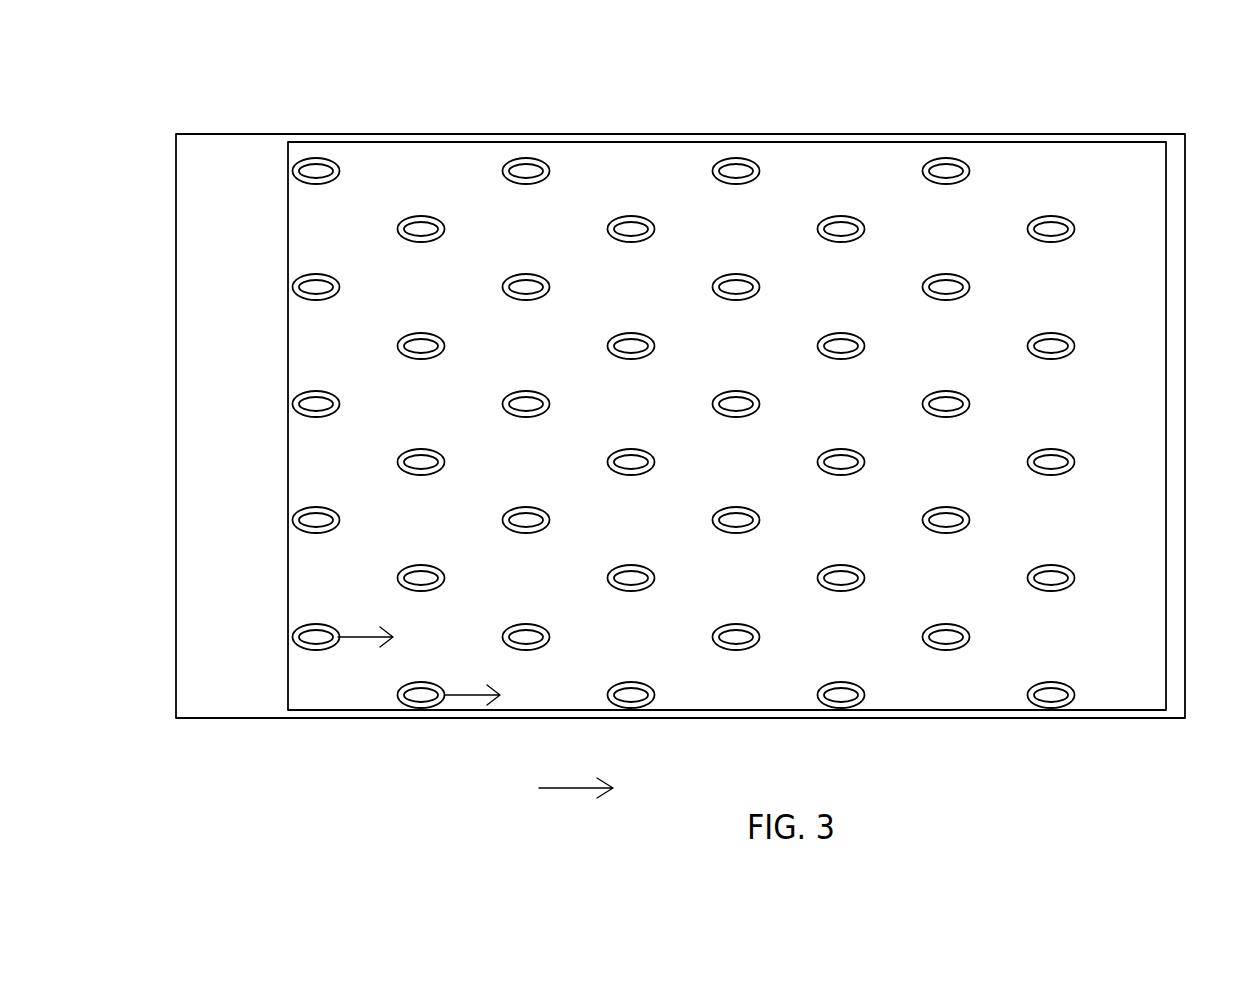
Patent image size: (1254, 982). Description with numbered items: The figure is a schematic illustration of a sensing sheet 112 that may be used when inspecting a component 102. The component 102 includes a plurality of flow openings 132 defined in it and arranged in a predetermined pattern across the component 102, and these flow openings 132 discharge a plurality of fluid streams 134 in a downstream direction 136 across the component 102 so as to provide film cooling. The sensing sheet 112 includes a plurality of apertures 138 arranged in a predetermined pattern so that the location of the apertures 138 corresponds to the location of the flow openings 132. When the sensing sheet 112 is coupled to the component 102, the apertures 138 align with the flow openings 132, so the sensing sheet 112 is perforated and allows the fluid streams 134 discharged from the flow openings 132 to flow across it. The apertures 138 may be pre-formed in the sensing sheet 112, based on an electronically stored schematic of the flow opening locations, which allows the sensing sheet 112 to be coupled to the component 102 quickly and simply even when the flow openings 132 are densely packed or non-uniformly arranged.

The component 102 is at (1128, 75).
The sensing sheet 112 is at (1173, 152).
The flow openings 132 is at (384, 701).
The fluid streams 134 is at (468, 695).
The downstream direction 136 is at (575, 788).
The apertures 138 is at (303, 650).